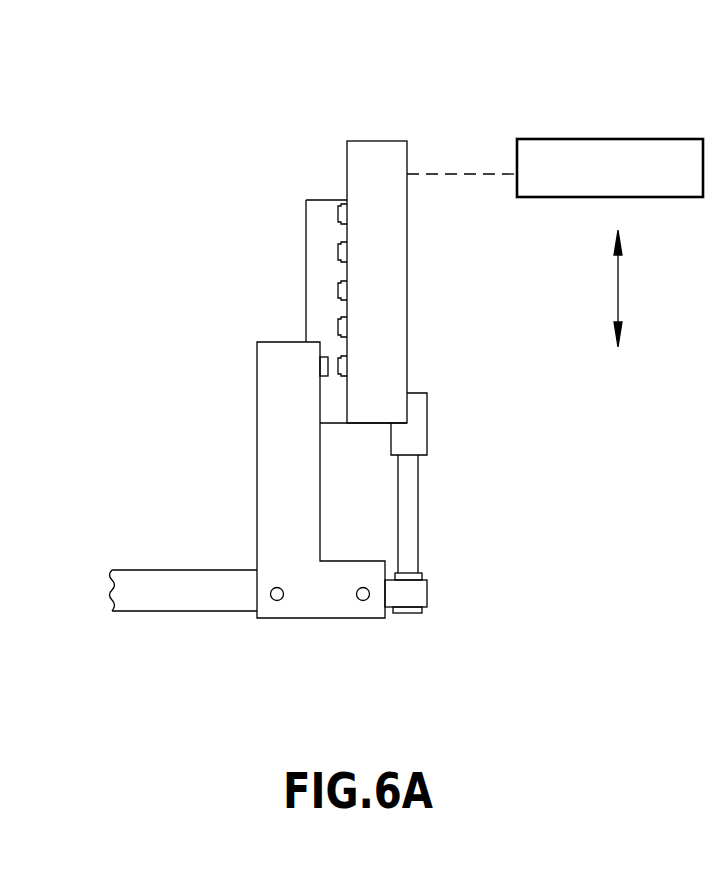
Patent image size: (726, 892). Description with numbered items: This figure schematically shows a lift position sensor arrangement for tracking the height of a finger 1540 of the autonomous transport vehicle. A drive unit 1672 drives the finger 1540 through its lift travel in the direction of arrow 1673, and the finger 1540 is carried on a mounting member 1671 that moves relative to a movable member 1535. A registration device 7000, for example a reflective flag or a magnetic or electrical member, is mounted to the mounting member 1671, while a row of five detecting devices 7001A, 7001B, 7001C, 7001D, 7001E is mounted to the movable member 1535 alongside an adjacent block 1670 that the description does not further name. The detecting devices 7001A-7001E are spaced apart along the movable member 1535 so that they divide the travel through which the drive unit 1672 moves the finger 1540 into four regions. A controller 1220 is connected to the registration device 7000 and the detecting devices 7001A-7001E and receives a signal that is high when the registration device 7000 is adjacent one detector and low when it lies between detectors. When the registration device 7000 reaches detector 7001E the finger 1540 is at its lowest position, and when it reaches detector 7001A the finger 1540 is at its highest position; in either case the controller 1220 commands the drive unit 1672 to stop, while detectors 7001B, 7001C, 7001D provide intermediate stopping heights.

The movable member 1535 is at (389, 152).
The controller 1220 is at (567, 139).
The sensor carrier block 1670 is at (316, 198).
The detecting device 7001A is at (337, 212).
The detecting device 7001B is at (337, 250).
The detecting device 7001C is at (337, 288).
The detecting device 7001D is at (333, 318).
The detecting device 7001E is at (333, 360).
The registration device 7000 is at (323, 355).
The mounting member 1671 is at (309, 603).
The finger 1540 is at (173, 602).
The drive unit 1672 is at (428, 425).
The arrow 1673 is at (620, 287).